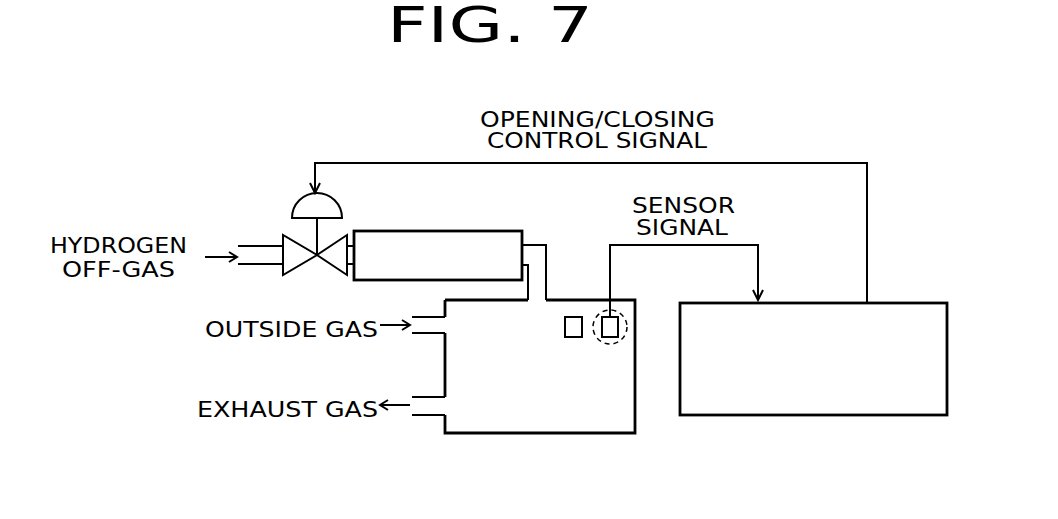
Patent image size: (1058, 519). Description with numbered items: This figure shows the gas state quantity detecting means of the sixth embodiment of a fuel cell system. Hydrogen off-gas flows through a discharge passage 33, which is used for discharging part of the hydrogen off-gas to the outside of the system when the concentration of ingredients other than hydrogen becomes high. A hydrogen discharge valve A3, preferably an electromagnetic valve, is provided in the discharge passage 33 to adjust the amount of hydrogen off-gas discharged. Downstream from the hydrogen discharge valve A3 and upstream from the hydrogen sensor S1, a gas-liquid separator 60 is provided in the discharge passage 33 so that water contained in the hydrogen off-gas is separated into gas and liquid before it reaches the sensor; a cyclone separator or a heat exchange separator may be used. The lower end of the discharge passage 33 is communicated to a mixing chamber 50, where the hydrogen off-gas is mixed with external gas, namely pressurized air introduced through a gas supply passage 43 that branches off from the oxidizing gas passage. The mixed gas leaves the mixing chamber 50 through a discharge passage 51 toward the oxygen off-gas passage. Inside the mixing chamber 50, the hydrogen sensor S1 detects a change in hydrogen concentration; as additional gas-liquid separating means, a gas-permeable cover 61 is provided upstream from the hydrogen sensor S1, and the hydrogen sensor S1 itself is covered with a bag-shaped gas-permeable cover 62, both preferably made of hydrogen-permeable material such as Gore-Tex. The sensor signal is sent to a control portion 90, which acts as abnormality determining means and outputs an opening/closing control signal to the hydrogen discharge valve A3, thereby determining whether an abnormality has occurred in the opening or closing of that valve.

The discharge passage 33 is at (262, 245).
The hydrogen discharge valve A3 is at (338, 208).
The gas-liquid separator 60 is at (488, 230).
The gas supply passage 43 is at (428, 317).
The discharge passage 51 is at (428, 397).
The mixing chamber 50 is at (500, 425).
The gas-permeable cover 61 is at (572, 337).
The bag-shaped gas-permeable cover 62 is at (610, 344).
The hydrogen sensor S1 is at (614, 322).
The control portion 90 is at (912, 302).